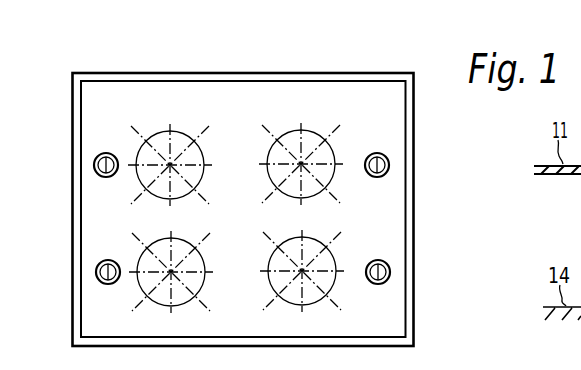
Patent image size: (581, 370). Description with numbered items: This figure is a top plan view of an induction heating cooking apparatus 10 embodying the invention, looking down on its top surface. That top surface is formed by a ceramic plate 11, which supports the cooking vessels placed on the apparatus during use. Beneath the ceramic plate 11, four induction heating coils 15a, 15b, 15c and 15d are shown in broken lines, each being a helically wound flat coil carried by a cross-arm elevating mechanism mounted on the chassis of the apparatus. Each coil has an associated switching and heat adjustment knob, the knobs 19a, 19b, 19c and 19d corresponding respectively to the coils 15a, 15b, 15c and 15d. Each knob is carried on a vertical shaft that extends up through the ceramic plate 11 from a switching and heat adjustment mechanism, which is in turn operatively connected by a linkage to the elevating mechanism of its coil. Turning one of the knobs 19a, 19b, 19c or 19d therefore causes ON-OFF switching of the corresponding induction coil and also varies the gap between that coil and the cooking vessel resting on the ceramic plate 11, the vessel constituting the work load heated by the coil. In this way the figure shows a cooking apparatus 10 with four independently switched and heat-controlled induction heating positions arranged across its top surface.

The induction heating cooking apparatus 10 is at (414, 85).
The ceramic plate 11 is at (382, 127).
The induction coil 15a is at (182, 248).
The induction coil 15b is at (183, 135).
The induction coil 15c is at (315, 243).
The induction coil 15d is at (312, 133).
The switching and heat adjustment knob 19a is at (96, 272).
The switching and heat adjustment knob 19b is at (94, 166).
The switching and heat adjustment knob 19c is at (392, 273).
The switching and heat adjustment knob 19d is at (390, 167).